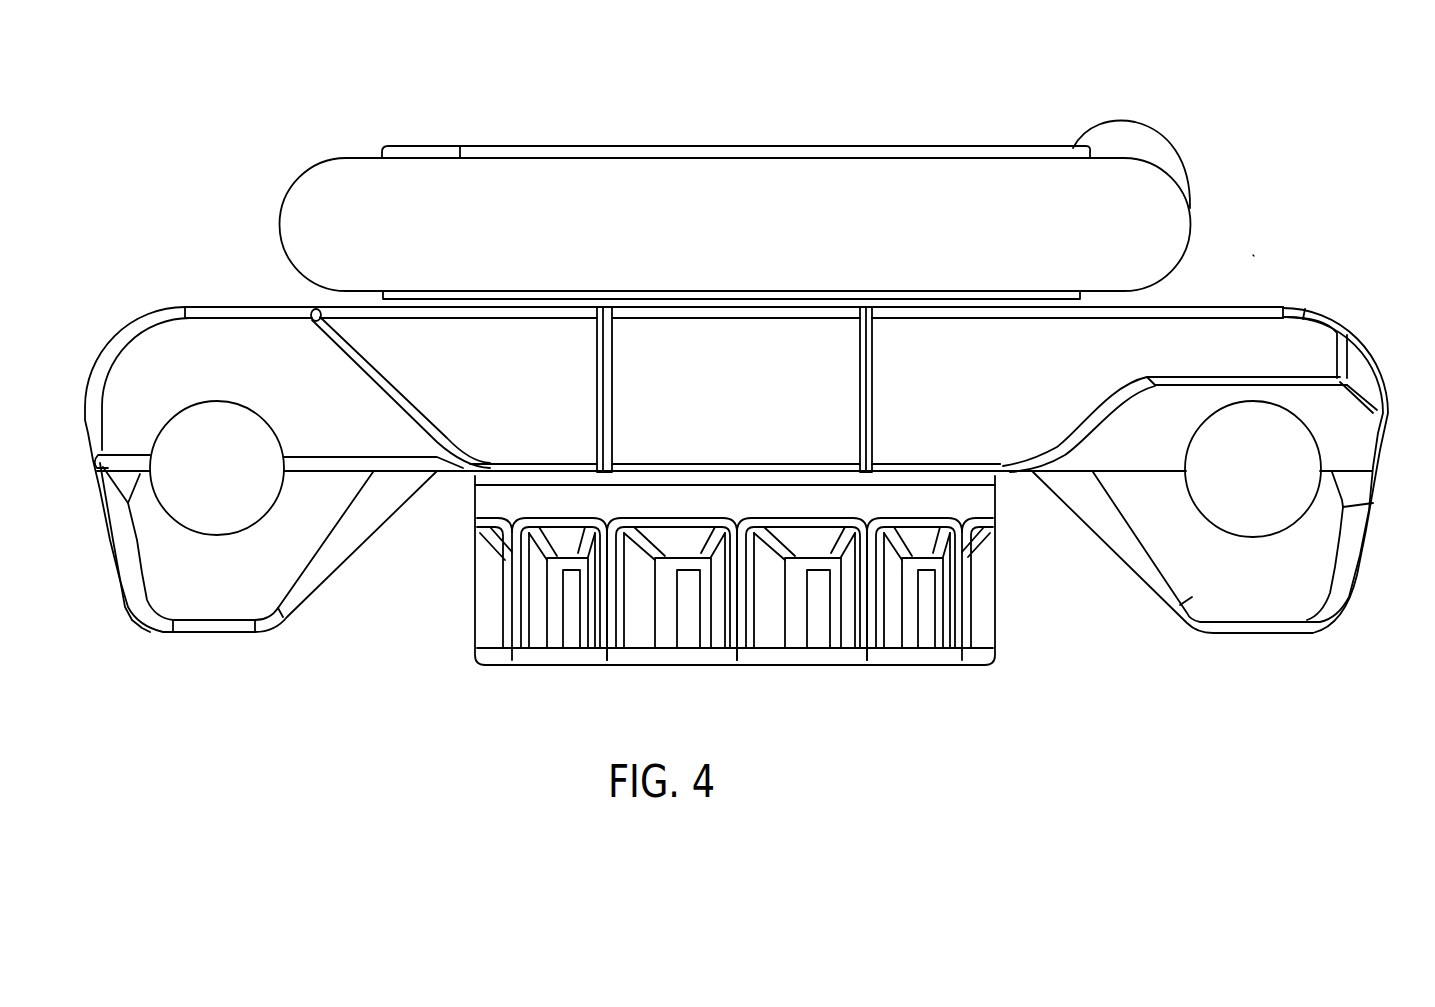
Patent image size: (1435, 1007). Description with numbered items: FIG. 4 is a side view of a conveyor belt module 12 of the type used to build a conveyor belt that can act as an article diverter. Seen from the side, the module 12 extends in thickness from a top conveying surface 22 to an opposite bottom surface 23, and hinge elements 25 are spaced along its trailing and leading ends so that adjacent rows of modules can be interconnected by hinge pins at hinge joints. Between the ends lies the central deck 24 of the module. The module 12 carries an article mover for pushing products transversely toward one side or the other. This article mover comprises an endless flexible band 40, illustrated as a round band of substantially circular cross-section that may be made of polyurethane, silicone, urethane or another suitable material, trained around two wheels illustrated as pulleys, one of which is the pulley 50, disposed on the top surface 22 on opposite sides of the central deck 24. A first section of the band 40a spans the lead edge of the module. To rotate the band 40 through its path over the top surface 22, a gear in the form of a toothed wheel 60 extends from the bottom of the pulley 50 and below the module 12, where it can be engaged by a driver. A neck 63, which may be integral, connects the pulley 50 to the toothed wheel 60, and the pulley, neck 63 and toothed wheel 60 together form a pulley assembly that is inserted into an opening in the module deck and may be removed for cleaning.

The conveyor belt module 12 is at (1252, 254).
The top conveying surface 22 is at (1100, 310).
The bottom surface 23 is at (452, 475).
The central deck 24 is at (947, 379).
The hinge elements 25 is at (155, 392).
The endless flexible band 40 is at (1086, 229).
The first section of the band 40a is at (1135, 142).
The pulley 50 is at (993, 143).
The toothed wheel 60 is at (471, 618).
The neck 63 is at (722, 405).